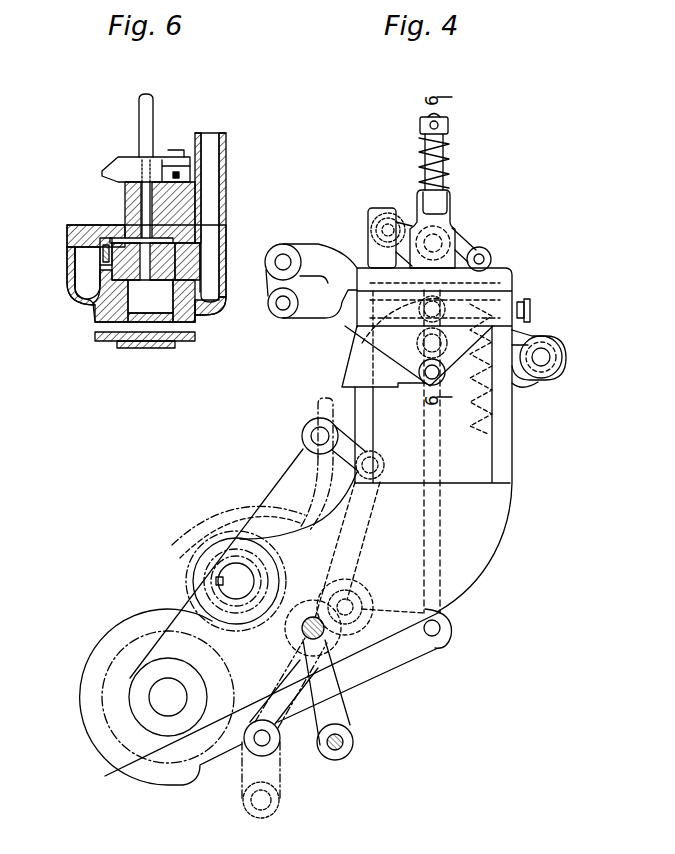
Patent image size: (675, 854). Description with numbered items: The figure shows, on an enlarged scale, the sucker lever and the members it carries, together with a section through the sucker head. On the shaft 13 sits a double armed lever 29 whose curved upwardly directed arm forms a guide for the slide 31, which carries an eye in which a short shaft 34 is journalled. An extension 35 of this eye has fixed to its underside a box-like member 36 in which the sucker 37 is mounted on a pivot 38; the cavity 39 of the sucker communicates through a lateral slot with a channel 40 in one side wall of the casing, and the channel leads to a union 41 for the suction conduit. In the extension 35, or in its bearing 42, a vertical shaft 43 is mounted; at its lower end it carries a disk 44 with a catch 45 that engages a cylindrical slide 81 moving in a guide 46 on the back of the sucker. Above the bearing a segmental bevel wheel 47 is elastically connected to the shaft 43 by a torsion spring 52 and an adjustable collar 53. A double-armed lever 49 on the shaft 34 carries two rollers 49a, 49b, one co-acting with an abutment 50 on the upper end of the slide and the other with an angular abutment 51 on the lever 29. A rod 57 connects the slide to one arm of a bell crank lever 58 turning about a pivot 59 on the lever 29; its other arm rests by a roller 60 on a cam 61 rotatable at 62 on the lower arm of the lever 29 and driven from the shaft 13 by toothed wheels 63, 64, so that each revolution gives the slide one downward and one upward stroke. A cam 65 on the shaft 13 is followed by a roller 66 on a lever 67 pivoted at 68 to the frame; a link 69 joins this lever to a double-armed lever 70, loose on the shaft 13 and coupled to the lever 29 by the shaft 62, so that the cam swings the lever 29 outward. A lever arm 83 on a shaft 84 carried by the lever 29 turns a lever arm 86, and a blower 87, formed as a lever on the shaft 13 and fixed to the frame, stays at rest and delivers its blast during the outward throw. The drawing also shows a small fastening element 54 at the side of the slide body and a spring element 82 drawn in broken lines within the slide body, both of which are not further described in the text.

In FIG. 4, the shaft 13 is at (232, 577).
In FIG. 4, the double armed lever 29 is at (507, 470).
In FIG. 4, the slide 31 is at (485, 455).
In FIG. 4, the short shaft 34 is at (450, 247).
In FIG. 6, the extension 35 is at (64, 232).
In FIG. 6, the box-like member 36 is at (217, 304).
In FIG. 4, the sucker 37 is at (346, 381).
In FIG. 6, the pivot 38 is at (138, 336).
In FIG. 4, the pivot 38 is at (428, 384).
In FIG. 6, the cavity 39 is at (150, 300).
In FIG. 6, the channel 40 is at (207, 258).
In FIG. 6, the union 41 is at (225, 176).
In FIG. 6, the bearing 42 is at (122, 191).
In FIG. 4, the bearing 42 is at (437, 222).
In FIG. 6, the vertical shaft 43 is at (150, 114).
In FIG. 4, the vertical shaft 43 is at (446, 168).
In FIG. 6, the disk 44 is at (128, 238).
In FIG. 6, the catch 45 is at (78, 264).
In FIG. 6, the guide 46 is at (108, 290).
In FIG. 6, the segmental bevel wheel 47 is at (108, 168).
In FIG. 4, the double-armed lever 49 is at (409, 222).
In FIG. 4, the roller 49a is at (492, 259).
In FIG. 4, the roller 49b is at (380, 234).
In FIG. 4, the abutment 50 is at (482, 286).
In FIG. 4, the angular abutment 51 is at (371, 210).
In FIG. 4, the torsion spring 52 is at (424, 156).
In FIG. 4, the adjustable collar 53 is at (449, 125).
In FIG. 4, the screw 54 is at (533, 307).
In FIG. 4, the rod 57 is at (438, 509).
In FIG. 4, the bell crank lever 58 is at (410, 644).
In FIG. 4, the pivot 59 is at (322, 640).
In FIG. 4, the roller 60 is at (276, 756).
In FIG. 4, the cam 61 is at (196, 771).
In FIG. 4, the pivot 62 is at (163, 702).
In FIG. 4, the toothed wheel 63 is at (178, 569).
In FIG. 4, the toothed wheel 64 is at (123, 650).
In FIG. 4, the cam 65 is at (290, 520).
In FIG. 4, the roller 66 is at (366, 597).
In FIG. 4, the pivoted lever 67 is at (373, 508).
In FIG. 4, the pivot 68 is at (341, 744).
In FIG. 4, the link 69 is at (312, 482).
In FIG. 4, the double-armed lever 70 is at (256, 504).
In FIG. 6, the cylindrical slide 81 is at (103, 262).
In FIG. 4, the spring 82 is at (488, 392).
In FIG. 4, the lever arm 83 is at (522, 338).
In FIG. 4, the shaft 84 is at (548, 357).
In FIG. 4, the lever arm 86 is at (524, 384).
In FIG. 4, the blower 87 is at (316, 404).